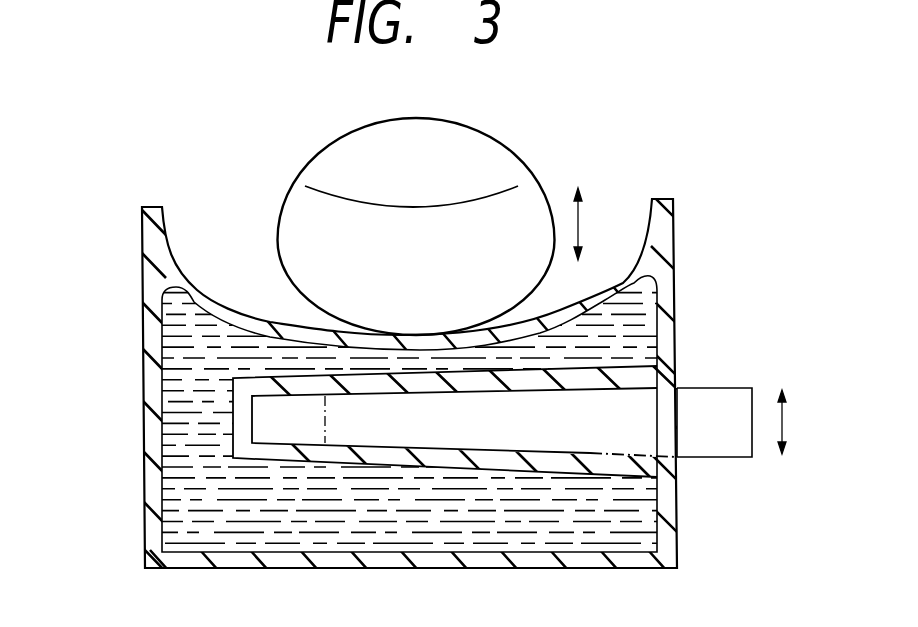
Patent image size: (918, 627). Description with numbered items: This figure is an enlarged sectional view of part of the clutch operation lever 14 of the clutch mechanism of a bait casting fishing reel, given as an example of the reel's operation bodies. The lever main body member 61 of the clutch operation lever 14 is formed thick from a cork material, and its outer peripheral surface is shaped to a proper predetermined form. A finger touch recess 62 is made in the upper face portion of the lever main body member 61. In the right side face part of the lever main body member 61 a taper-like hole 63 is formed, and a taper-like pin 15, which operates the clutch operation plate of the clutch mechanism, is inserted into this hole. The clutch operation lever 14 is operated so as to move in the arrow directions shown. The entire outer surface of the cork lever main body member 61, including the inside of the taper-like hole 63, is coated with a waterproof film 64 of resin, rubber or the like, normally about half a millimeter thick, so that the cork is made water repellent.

The clutch operation lever 14 is at (428, 345).
The taper-like pin 15 is at (723, 388).
The lever main body member 61 is at (165, 383).
The finger touch recess 62 is at (410, 335).
The taper-like hole 63 is at (632, 455).
The waterproof film 64 is at (148, 503).